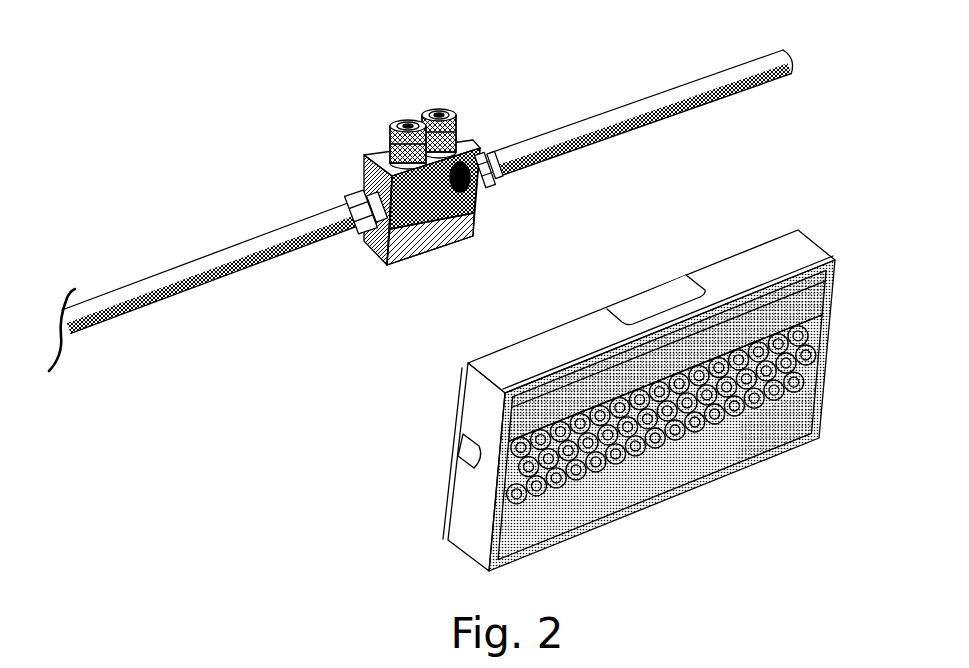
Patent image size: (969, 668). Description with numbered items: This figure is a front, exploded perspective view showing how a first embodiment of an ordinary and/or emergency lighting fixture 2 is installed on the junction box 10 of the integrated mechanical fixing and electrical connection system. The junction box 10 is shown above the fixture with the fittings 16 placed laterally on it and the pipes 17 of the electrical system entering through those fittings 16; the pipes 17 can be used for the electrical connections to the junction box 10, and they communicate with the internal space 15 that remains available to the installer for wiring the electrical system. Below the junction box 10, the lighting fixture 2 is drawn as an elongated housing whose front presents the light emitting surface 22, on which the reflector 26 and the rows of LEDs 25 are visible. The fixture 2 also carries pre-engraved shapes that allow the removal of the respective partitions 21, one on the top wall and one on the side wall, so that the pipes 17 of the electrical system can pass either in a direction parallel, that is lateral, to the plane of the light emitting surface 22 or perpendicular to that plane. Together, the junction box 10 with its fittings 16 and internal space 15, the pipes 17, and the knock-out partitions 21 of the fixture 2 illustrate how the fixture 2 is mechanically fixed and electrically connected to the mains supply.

The lighting fixture 2 is at (635, 366).
The junction box 10 is at (429, 193).
The internal space 15 is at (403, 242).
The fittings 16 is at (437, 112).
The pipes 17 is at (180, 272).
The partitions 21 is at (655, 310).
The light emitting surface 22 is at (760, 427).
The LEDs 25 is at (717, 400).
The reflector 26 is at (783, 345).